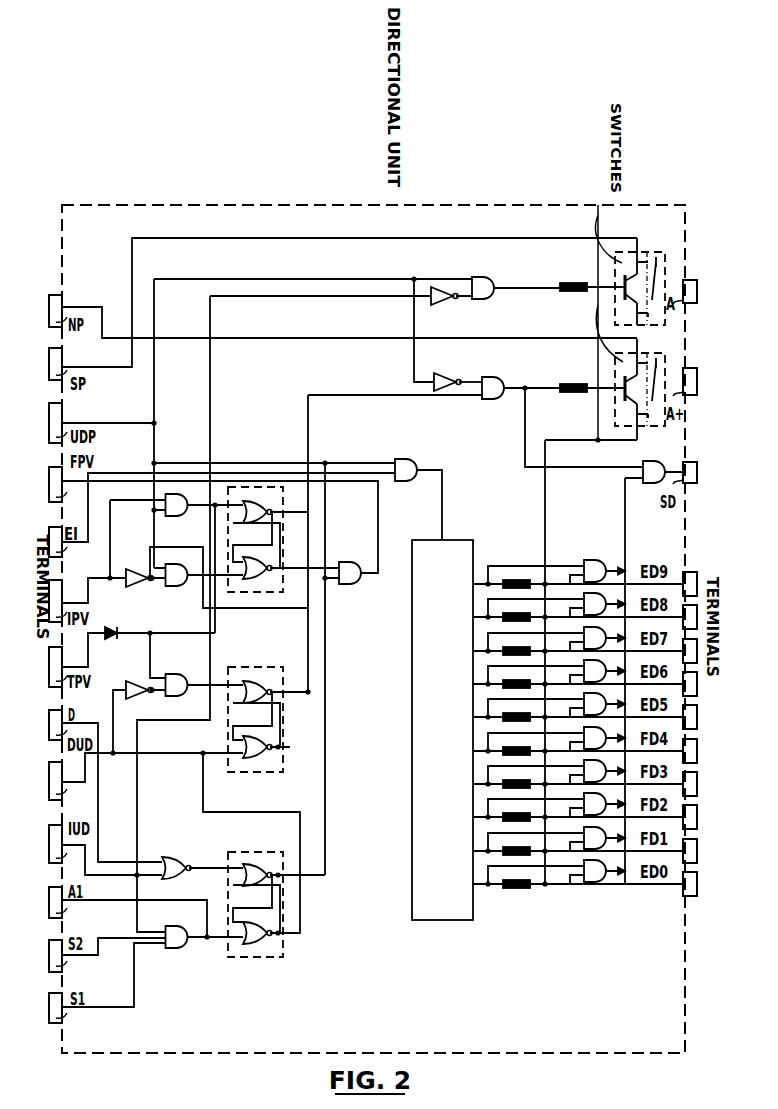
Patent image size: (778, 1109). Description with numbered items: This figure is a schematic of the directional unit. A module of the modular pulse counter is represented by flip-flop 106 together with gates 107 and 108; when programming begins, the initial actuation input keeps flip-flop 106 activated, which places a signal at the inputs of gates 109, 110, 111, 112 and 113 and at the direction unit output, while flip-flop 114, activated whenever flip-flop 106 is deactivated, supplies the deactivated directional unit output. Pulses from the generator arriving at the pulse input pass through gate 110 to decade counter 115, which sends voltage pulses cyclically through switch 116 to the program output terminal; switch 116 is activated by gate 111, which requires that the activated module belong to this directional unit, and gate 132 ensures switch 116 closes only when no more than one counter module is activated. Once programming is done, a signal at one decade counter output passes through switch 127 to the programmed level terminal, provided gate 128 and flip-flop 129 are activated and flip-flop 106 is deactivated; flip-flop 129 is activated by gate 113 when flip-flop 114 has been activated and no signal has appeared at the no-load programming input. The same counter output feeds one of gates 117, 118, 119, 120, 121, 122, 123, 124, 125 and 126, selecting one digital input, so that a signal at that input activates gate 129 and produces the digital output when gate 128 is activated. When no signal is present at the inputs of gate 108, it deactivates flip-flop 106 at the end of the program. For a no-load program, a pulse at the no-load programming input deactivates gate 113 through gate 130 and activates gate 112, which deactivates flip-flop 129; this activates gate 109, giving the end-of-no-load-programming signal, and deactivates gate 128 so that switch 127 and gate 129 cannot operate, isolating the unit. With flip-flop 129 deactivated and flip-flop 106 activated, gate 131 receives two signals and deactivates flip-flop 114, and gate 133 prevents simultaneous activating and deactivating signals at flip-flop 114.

The flip-flop 106 is at (272, 859).
The gate 107 is at (183, 924).
The gate 108 is at (180, 852).
The gate 109 is at (349, 565).
The gate 110 is at (407, 462).
The gate 111 is at (484, 285).
The gate 112 is at (183, 512).
The gate 113 is at (177, 585).
The flip-flop 114 is at (278, 674).
The decade counter 115 is at (452, 721).
The switch 116 is at (650, 252).
The gate 117 is at (583, 870).
The gate 118 is at (583, 837).
The gate 119 is at (583, 803).
The gate 120 is at (583, 770).
The gate 121 is at (583, 737).
The gate 122 is at (583, 703).
The gate 123 is at (583, 670).
The gate 124 is at (583, 637).
The gate 125 is at (583, 603).
The gate 126 is at (583, 570).
The switch 127 is at (650, 360).
The gate 128 is at (494, 383).
The flip-flop 129 is at (281, 582).
The gate 130 is at (134, 581).
The gate 131 is at (180, 674).
The gate 132 is at (443, 300).
The gate 133 is at (130, 684).